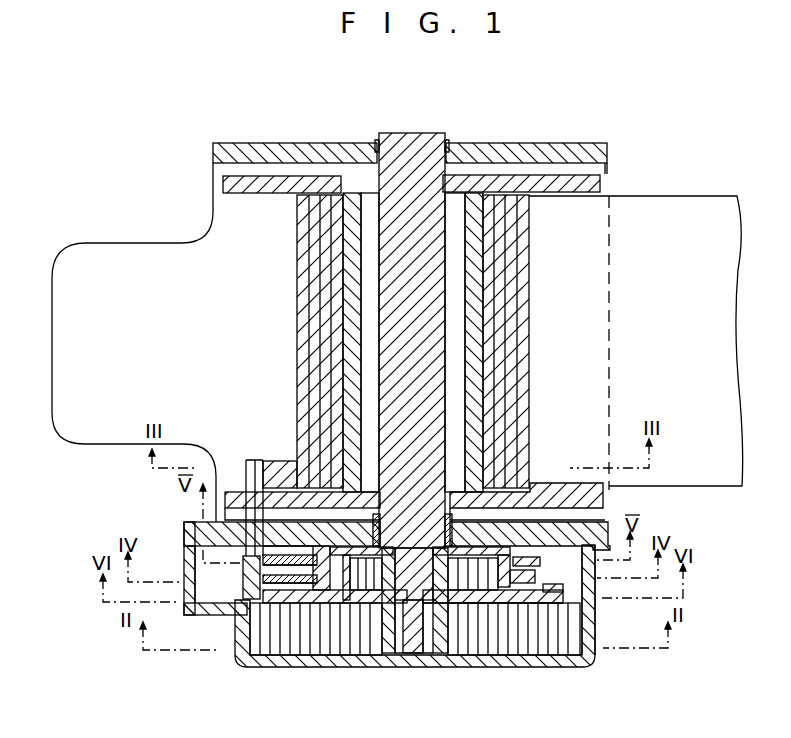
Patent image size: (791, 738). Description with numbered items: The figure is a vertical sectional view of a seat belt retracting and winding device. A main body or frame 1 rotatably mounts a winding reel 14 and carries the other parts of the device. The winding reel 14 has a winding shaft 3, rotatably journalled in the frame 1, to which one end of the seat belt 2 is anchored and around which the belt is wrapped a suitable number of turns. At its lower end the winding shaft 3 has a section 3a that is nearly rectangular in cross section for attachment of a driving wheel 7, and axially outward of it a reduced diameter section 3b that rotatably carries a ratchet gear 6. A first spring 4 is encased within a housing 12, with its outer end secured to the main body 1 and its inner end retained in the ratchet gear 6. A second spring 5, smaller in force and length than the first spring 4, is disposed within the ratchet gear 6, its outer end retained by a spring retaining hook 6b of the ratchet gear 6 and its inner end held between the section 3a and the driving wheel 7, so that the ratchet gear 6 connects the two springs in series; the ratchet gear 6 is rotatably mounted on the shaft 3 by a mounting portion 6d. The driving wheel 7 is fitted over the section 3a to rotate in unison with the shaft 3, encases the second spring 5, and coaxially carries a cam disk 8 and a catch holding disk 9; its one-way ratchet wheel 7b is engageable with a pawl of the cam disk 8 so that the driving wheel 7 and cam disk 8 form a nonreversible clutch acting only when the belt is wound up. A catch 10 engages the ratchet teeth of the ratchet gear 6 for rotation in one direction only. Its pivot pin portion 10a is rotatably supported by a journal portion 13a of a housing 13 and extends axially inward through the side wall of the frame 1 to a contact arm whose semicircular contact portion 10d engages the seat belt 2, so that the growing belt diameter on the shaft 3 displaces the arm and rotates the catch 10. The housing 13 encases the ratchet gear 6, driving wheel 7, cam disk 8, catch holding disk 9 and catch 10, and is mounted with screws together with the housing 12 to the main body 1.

The main body or frame 1 is at (52, 428).
The seat belt 2 is at (707, 486).
The winding shaft 3 is at (430, 140).
The section of the winding shaft 3a is at (400, 610).
The reduced diameter section 3b is at (427, 655).
The first spring 4 is at (580, 660).
The second spring 5 is at (464, 583).
The ratchet gear 6 is at (389, 640).
The spring retaining hook 6b is at (350, 600).
The mounting part or portion 6d is at (441, 640).
The driving wheel 7 is at (514, 580).
The one-way ratchet wheel 7b is at (537, 576).
The cam disk 8 is at (541, 592).
The catch holding disk 9 is at (538, 538).
The catch 10 is at (241, 599).
The pivot pin portion 10a is at (245, 490).
The contact portion 10d is at (286, 468).
The housing 12 is at (272, 668).
The housing or casing 13 is at (183, 600).
The journal portion 13a is at (185, 548).
The winding reel 14 is at (522, 180).